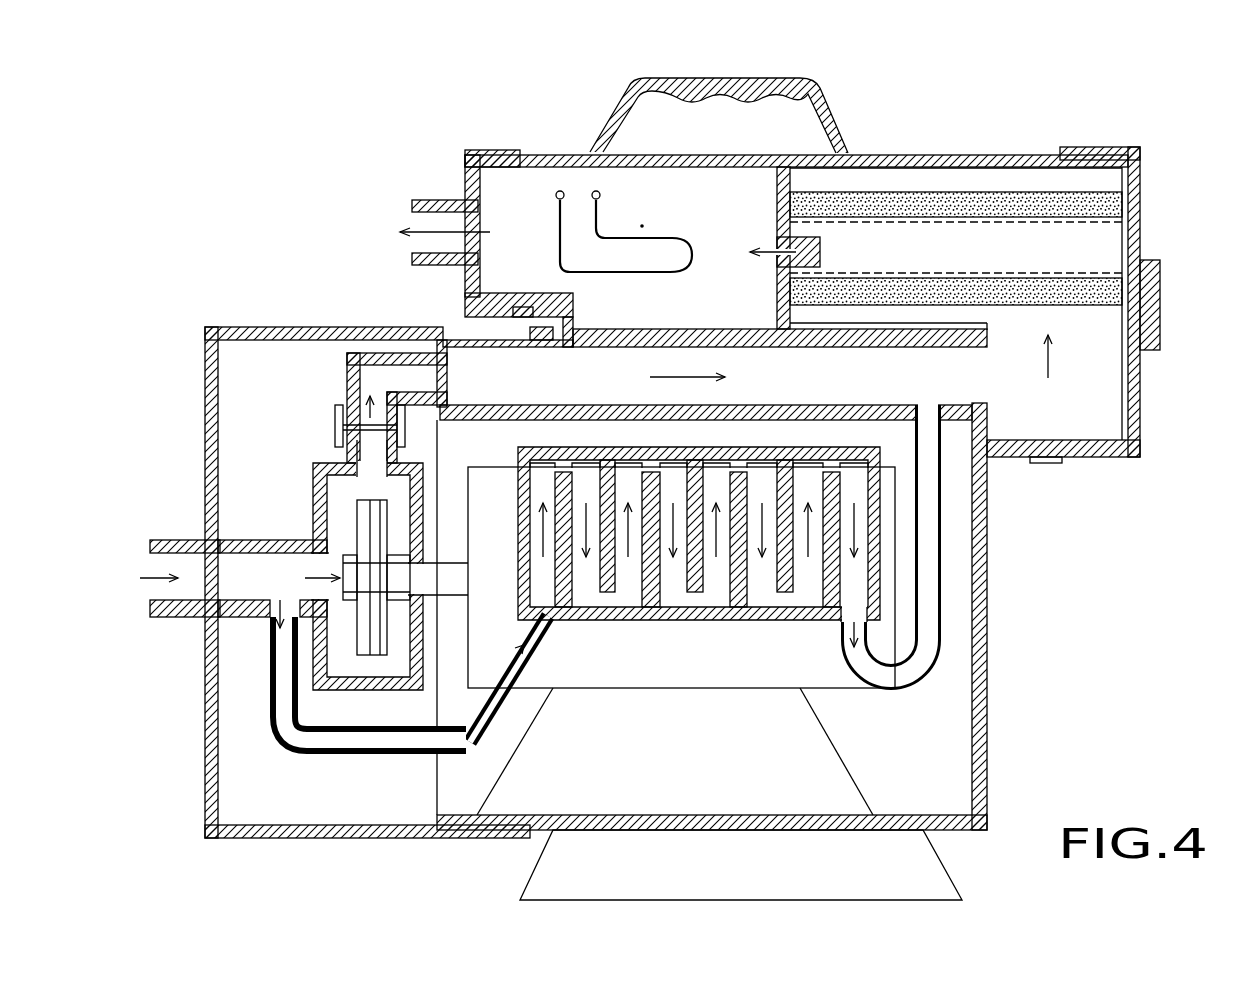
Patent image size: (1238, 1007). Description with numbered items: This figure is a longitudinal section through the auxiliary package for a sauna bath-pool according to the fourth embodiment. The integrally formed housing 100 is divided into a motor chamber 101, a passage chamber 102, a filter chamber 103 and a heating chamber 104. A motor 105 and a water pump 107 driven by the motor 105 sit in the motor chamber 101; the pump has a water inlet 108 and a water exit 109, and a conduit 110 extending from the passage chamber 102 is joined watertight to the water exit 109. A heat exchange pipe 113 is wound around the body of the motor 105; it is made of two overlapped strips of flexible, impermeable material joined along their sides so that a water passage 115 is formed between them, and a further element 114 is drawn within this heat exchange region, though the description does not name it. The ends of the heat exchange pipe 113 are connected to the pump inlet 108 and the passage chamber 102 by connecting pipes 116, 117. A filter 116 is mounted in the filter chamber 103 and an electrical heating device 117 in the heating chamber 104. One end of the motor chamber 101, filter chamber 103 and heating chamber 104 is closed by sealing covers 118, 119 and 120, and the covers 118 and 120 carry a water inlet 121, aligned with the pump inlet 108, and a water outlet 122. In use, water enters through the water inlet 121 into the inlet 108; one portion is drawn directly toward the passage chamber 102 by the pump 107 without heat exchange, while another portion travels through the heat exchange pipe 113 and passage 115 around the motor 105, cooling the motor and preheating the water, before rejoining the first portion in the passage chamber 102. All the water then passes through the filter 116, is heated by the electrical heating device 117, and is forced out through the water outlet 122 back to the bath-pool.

The housing 100 is at (975, 690).
The motor chamber 101 is at (470, 782).
The passage chamber 102 is at (462, 352).
The filter chamber 103 is at (1020, 182).
The heating chamber 104 is at (530, 192).
The motor 105 is at (815, 660).
The water pump 107 is at (312, 686).
The water inlet 108 is at (265, 548).
The water exit 109 is at (342, 462).
The conduit 110 is at (345, 388).
The heat exchange pipe 113 is at (700, 590).
The heat exchanger partition 114 is at (653, 585).
The water passage 115 is at (545, 590).
The filter 116 is at (935, 205).
The electrical heating device 117 is at (572, 218).
The sealing cover 118 is at (213, 400).
The sealing cover 119 is at (1140, 440).
The sealing cover 120 is at (480, 150).
The water inlet 121 is at (175, 545).
The water outlet 122 is at (435, 200).